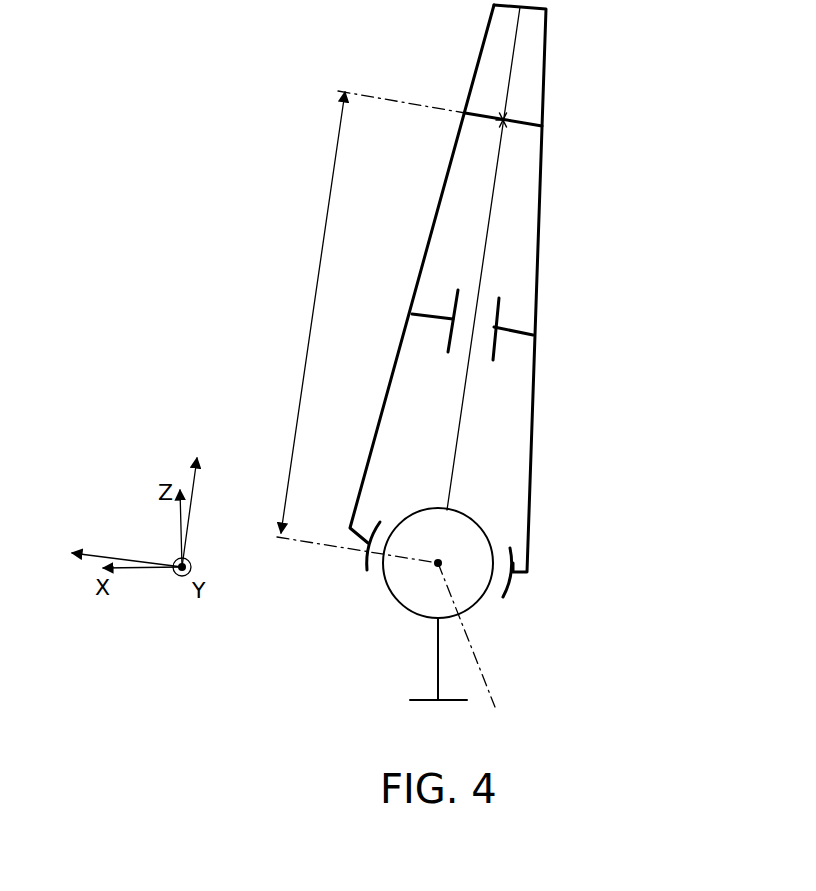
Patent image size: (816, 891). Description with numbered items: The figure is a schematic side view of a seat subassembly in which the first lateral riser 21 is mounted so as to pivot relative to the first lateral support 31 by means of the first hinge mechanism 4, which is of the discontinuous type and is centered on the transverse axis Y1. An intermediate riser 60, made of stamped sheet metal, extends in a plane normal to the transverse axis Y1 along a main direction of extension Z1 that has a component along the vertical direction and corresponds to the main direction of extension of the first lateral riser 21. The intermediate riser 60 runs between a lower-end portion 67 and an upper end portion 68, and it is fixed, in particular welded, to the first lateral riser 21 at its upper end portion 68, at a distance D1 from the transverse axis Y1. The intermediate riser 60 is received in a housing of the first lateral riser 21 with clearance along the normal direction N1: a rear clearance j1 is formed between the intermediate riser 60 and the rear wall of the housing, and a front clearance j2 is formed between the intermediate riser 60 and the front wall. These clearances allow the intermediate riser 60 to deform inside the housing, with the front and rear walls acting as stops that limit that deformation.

The first lateral riser 21 is at (546, 72).
The intermediate riser 60 is at (484, 258).
The upper end portion 68 is at (499, 153).
The lower-end portion 67 is at (451, 488).
The rear clearance j1 is at (480, 344).
The front clearance j2 is at (460, 312).
The first hinge mechanism 4 is at (473, 608).
The first lateral support 31 is at (438, 642).
The transverse axis Y1 is at (472, 649).
The distance D1 is at (368, 327).
The normal direction N1 is at (117, 544).
The main direction of extension Z1 is at (208, 507).